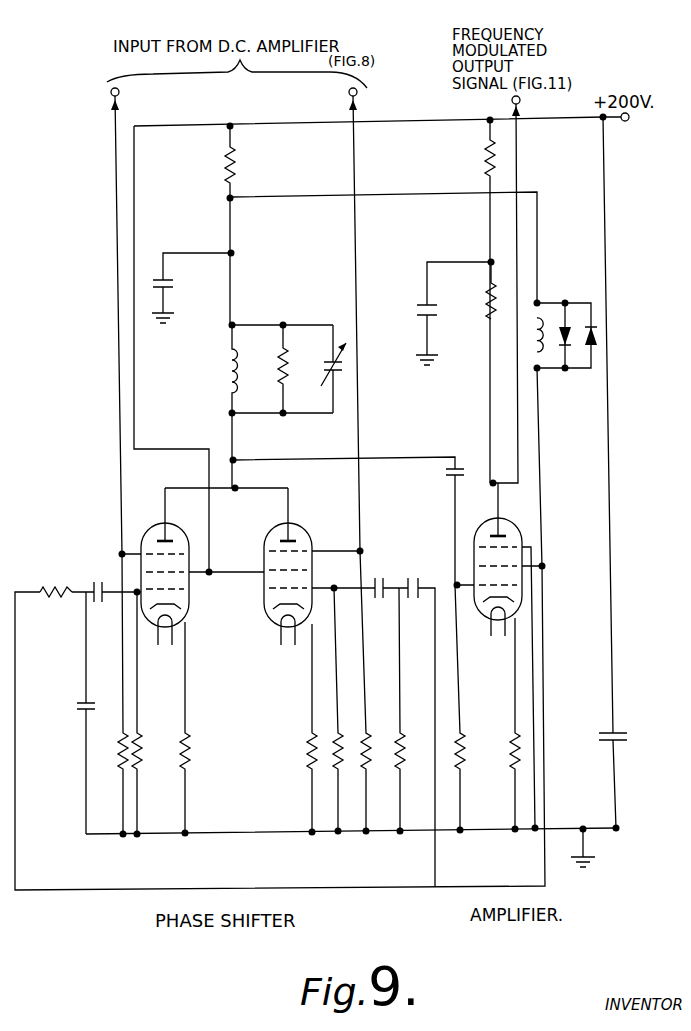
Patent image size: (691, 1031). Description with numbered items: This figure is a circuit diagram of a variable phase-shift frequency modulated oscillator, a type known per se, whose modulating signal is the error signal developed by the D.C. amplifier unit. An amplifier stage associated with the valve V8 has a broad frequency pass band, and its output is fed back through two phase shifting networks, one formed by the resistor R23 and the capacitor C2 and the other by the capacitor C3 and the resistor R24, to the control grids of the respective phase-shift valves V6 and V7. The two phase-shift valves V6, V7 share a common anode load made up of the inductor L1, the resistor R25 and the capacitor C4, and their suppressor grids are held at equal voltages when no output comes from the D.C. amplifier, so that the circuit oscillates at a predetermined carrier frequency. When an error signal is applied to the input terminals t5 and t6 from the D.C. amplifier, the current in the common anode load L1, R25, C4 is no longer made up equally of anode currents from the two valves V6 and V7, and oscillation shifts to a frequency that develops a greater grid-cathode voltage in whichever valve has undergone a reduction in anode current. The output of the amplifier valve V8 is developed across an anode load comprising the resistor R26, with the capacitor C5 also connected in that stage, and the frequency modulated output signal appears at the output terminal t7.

The input terminal t5 is at (128, 461).
The input terminal t6 is at (367, 458).
The output terminal t7 is at (522, 285).
The inductor of common anode load L1 is at (221, 369).
The resistor of common anode load R25 is at (282, 369).
The capacitor of common anode load C4 is at (322, 369).
The capacitor C5 is at (441, 313).
The anode load resistor R26 is at (476, 300).
The phase shifting network resistor R23 is at (58, 580).
The phase shifting network capacitor C2 is at (70, 713).
The phase shifting network capacitor C3 is at (405, 716).
The phase shifting network resistor R24 is at (415, 711).
The phase-shift valve V6 is at (157, 566).
The phase-shift valve V7 is at (296, 566).
The amplifier valve V8 is at (492, 559).